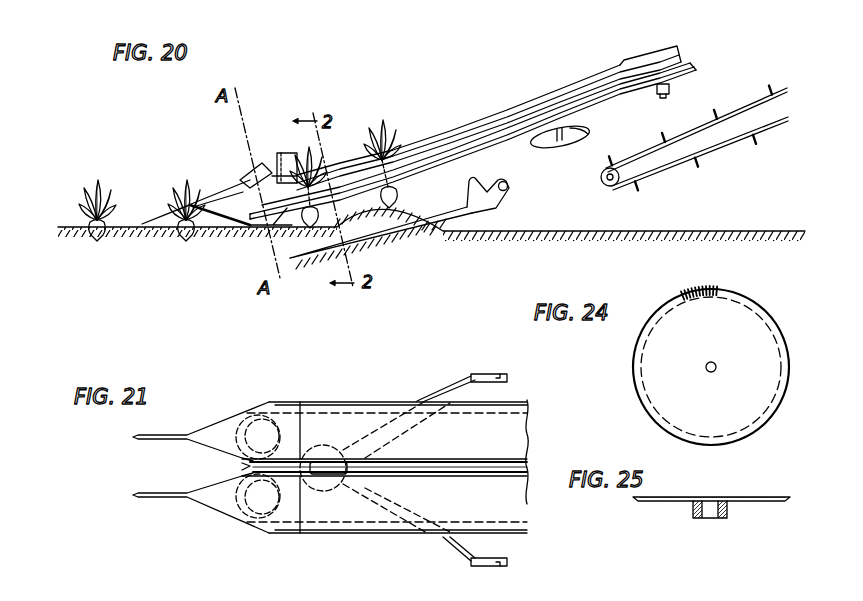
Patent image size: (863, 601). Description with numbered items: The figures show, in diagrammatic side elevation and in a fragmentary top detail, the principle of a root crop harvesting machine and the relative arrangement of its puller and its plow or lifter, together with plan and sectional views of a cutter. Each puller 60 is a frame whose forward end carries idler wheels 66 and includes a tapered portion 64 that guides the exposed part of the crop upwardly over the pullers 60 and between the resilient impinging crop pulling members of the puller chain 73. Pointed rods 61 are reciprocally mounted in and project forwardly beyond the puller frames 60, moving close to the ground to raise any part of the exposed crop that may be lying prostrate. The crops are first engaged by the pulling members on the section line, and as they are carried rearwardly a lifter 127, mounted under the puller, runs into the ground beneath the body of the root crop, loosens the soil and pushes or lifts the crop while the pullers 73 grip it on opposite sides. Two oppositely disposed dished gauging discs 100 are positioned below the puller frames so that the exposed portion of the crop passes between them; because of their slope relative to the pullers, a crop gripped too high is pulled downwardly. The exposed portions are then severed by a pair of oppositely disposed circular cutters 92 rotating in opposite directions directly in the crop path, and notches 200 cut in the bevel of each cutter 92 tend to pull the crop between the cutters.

In FIG. 20, the puller 60 is at (513, 110).
In FIG. 21, the puller 60 is at (318, 428).
In FIG. 20, the pointed rods 61 is at (158, 228).
In FIG. 21, the pointed rods 61 is at (160, 492).
In FIG. 20, the tapered portion 64 is at (220, 200).
In FIG. 21, the idler wheels 66 is at (255, 495).
In FIG. 20, the puller chain 73 is at (435, 158).
In FIG. 21, the puller chain 73 is at (242, 473).
In FIG. 20, the circular cutters 92 is at (695, 64).
In FIG. 24, the circular cutters 92 is at (658, 348).
In FIG. 25, the circular cutters 92 is at (648, 500).
In FIG. 20, the gauging discs 100 is at (546, 140).
In FIG. 20, the lifter 127 is at (452, 210).
In FIG. 21, the lifter 127 is at (452, 388).
In FIG. 24, the notches 200 is at (718, 293).